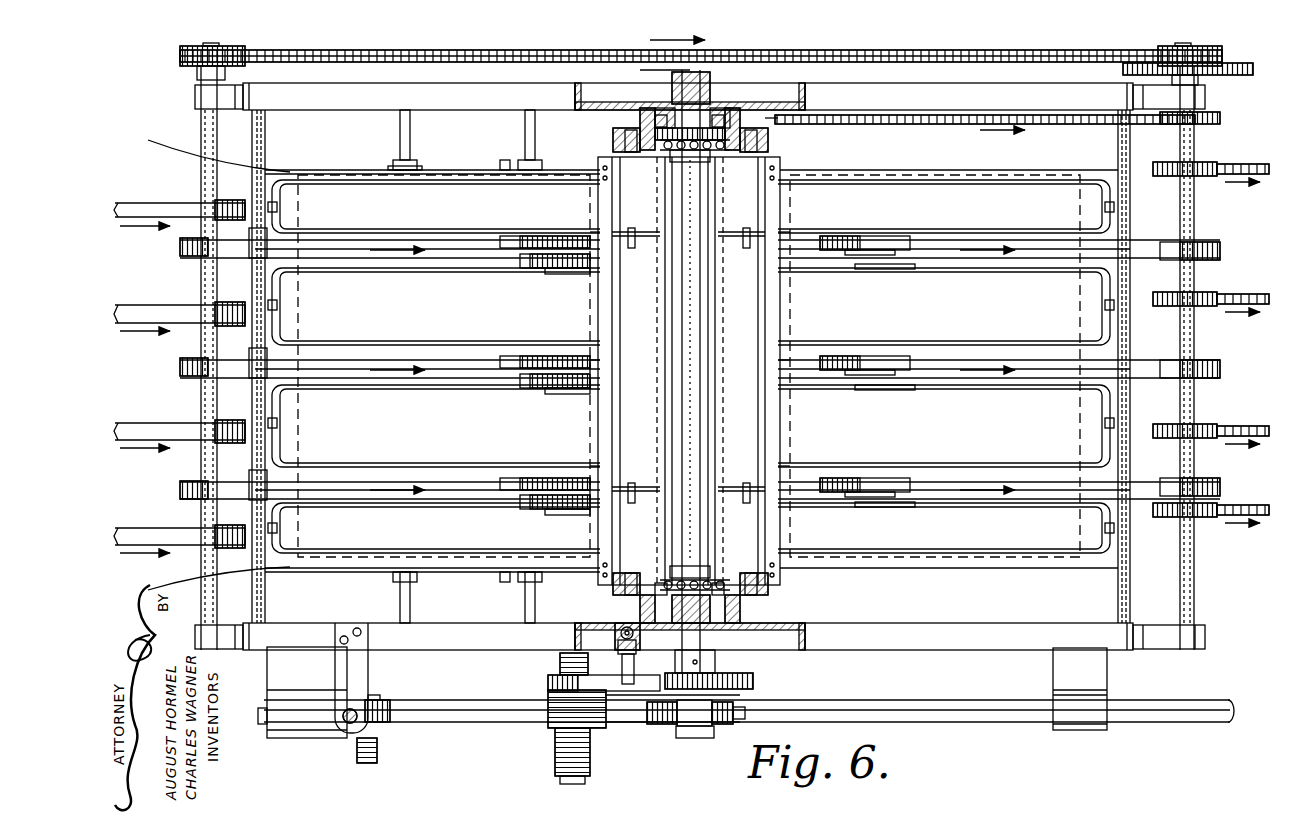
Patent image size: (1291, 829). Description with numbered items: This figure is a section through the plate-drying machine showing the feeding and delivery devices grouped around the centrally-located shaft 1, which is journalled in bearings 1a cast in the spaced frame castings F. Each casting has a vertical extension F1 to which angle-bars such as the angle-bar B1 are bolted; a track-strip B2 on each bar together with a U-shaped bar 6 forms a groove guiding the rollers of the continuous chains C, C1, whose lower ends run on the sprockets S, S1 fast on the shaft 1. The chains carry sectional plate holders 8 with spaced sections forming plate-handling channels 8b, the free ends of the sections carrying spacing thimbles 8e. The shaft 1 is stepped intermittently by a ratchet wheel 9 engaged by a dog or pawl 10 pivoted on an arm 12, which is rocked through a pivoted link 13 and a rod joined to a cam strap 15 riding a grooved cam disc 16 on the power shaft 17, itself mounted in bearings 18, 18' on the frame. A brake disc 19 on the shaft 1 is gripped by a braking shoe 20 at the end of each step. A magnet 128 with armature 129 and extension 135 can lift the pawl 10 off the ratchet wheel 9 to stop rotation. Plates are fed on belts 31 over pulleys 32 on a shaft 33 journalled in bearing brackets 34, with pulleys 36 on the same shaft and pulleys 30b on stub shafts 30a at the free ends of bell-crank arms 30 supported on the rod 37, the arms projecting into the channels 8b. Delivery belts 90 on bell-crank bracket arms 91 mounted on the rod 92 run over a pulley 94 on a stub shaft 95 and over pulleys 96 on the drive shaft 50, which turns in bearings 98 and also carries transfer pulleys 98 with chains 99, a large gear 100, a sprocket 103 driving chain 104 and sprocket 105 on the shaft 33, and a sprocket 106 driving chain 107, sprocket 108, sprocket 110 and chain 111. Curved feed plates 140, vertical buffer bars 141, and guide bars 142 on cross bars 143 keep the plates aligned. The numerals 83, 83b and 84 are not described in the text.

The centrally-located shaft 1 is at (708, 385).
The bearings 1a is at (708, 78).
The U-shaped bar 6 is at (612, 140).
The sectional plate holder 8 is at (993, 548).
The plate-handling channels 8b is at (580, 240).
The spacing thimbles 8e is at (279, 207).
The ratchet wheel 9 is at (755, 680).
The dog or pawl 10 is at (600, 680).
The arm 12 is at (672, 60).
The pivoted link 13 is at (552, 710).
The cam strap 15 is at (575, 783).
The grooved cam disc 16 is at (556, 745).
The power shaft 17 is at (604, 310).
The bearing 18 is at (302, 692).
The bearing 18' is at (1080, 689).
The brake disc or wheel 19 is at (708, 738).
The braking shoe 20 is at (740, 720).
The bracket arms 30 is at (355, 240).
The stub shafts 30a is at (540, 262).
The pulleys 30b is at (580, 276).
The belts 31 is at (140, 193).
The pulleys 32 is at (190, 203).
The shaft 33 is at (207, 122).
The bearing brackets 34 is at (194, 96).
The pulleys 36 is at (240, 353).
The rod 37 is at (268, 450).
The drive shaft 50 is at (1180, 280).
The pivot arm 83 is at (356, 710).
The pivot arm gear 83b is at (375, 716).
The gear 84 is at (378, 752).
The delivery belts 90 is at (948, 250).
The bell-crank bracket arms 91 is at (940, 240).
The rod 92 is at (1130, 328).
The pulley 94 is at (848, 240).
The stub shaft 95 is at (862, 260).
The pulleys 96 is at (1218, 258).
The bearings / transfer pulleys 98 is at (1168, 178).
The chains 99 is at (1236, 175).
The large gear 100 is at (1248, 50).
The sprocket 103 is at (1162, 47).
The chain 104 is at (1020, 44).
The sprocket 105 is at (188, 47).
The sprocket 106 is at (1205, 115).
The chain 107 is at (1100, 122).
The sprocket 108 is at (735, 108).
The sprocket 110 is at (720, 98).
The chain 111 is at (740, 122).
The magnet 128 is at (614, 638).
The armature 129 is at (627, 630).
The extension 135 is at (628, 676).
The curved feed plates 140 is at (292, 168).
The vertical buffer or guide bars 141 is at (500, 160).
The vertical guide bars 142 is at (630, 248).
The cross bars 143 is at (656, 392).
The angle-bar B1 is at (640, 118).
The track-strip B2 is at (738, 155).
The continuous chain C is at (742, 590).
The continuous chain C1 is at (755, 175).
The frame castings F is at (688, 366).
The vertical extension F1 is at (806, 97).
The sprocket S is at (675, 568).
The sprocket S1 is at (672, 148).